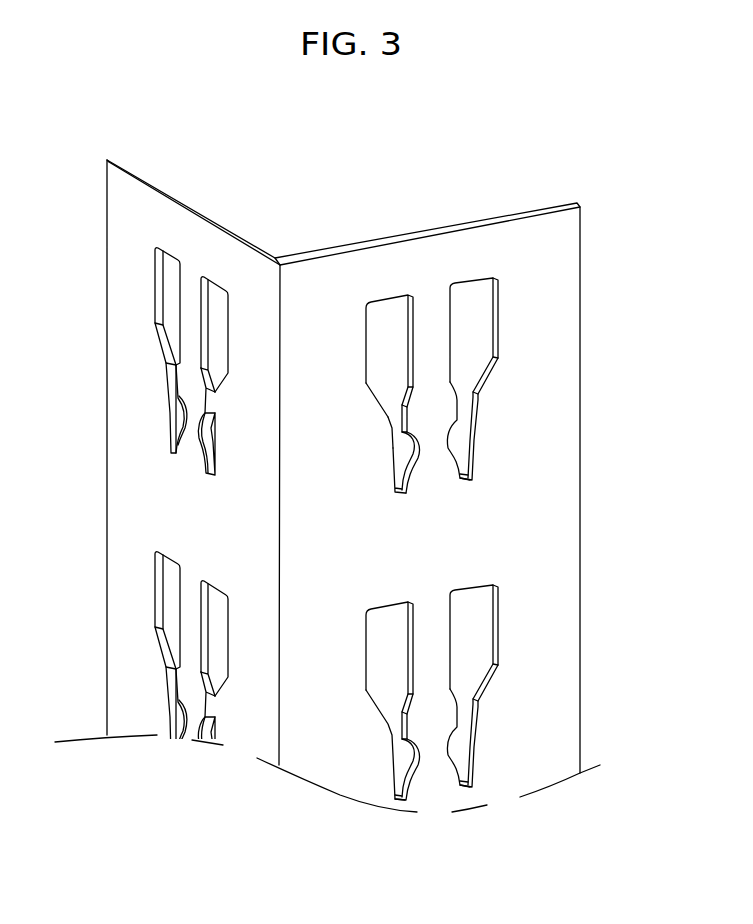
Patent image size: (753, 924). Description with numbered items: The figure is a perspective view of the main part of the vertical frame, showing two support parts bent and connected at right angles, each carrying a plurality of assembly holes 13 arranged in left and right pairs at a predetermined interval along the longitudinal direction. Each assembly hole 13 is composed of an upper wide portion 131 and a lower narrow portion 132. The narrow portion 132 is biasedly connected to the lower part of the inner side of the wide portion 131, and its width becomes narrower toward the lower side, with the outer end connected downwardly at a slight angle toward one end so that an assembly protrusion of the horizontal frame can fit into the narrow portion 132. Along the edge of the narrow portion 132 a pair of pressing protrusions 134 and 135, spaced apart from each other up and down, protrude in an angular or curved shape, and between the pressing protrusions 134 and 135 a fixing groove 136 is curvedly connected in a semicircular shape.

The assembly hole 13 is at (352, 293).
The wide portion 131 is at (388, 345).
The narrow portion 132 is at (402, 413).
The pressing protrusion 134 is at (410, 418).
The fixing groove 136 is at (406, 443).
The pressing protrusion 135 is at (410, 475).